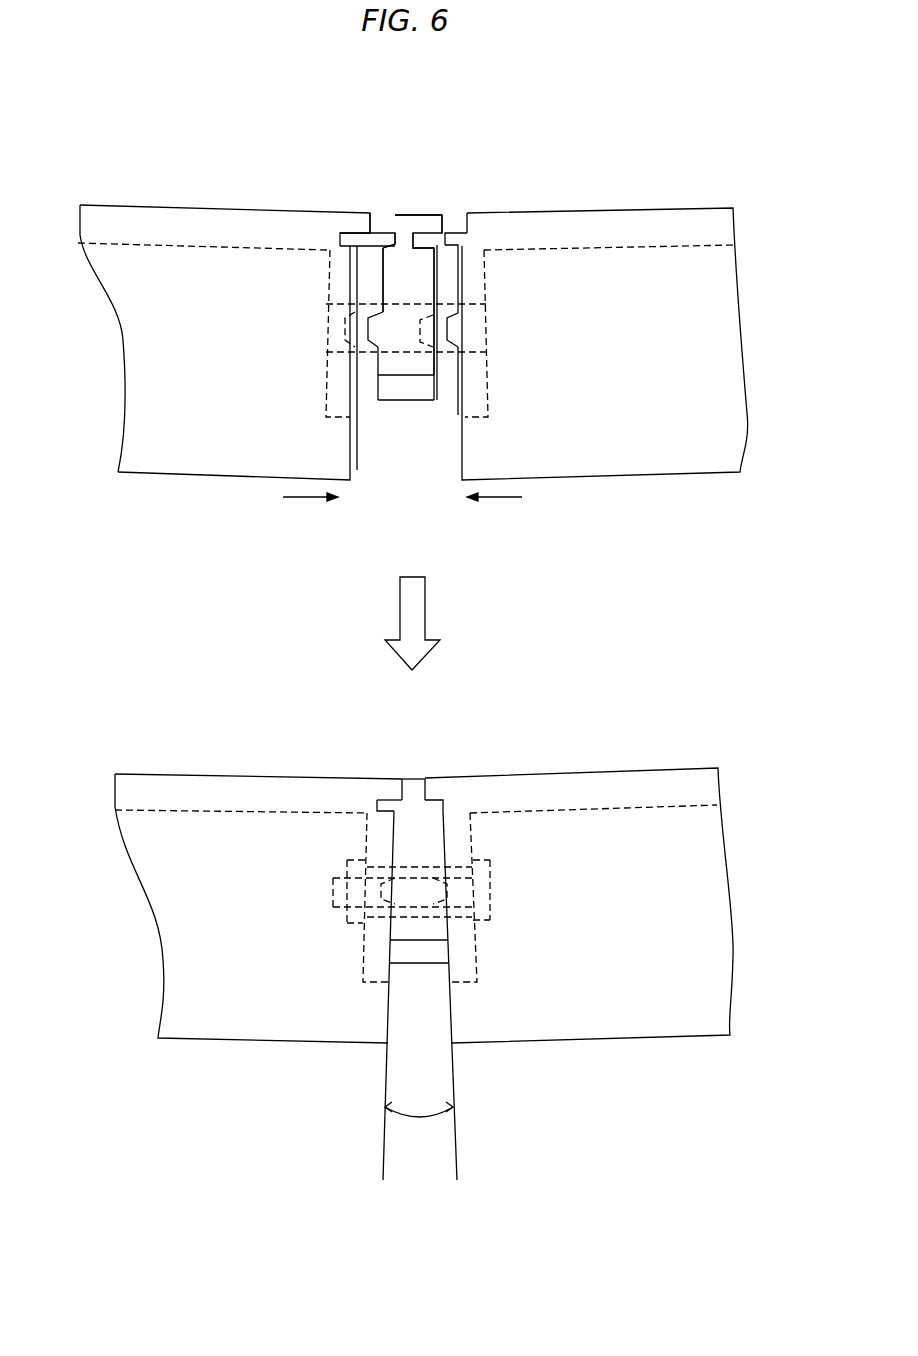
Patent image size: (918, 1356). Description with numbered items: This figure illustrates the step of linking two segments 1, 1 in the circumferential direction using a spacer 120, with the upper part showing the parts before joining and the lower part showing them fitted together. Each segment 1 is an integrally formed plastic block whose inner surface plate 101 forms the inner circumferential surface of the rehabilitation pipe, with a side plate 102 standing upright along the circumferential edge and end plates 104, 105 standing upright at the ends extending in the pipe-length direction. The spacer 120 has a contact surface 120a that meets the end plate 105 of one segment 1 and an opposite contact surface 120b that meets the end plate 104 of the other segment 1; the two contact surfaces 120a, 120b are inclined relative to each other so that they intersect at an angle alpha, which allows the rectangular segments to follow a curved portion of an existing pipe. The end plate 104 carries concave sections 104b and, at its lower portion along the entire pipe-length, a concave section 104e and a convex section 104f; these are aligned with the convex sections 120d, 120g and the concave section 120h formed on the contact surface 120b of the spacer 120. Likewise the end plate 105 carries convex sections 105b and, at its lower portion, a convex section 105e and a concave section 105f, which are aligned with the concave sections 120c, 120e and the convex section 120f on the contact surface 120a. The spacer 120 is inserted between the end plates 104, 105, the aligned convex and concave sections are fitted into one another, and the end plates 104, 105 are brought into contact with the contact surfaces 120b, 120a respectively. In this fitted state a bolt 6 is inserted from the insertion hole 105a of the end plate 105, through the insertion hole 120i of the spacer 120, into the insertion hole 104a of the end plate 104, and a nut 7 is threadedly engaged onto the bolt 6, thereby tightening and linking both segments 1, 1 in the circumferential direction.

The segment 1 is at (184, 183).
The inner surface plate 101 is at (265, 213).
The side plate 102 is at (196, 478).
The end plate 104 is at (340, 418).
The insertion hole 104a is at (330, 320).
The concave section 104b is at (346, 345).
The concave section 104e is at (343, 232).
The convex section 104f is at (370, 232).
The end plate 105 is at (475, 420).
The insertion hole 105a is at (487, 312).
The convex section 105b is at (450, 330).
The convex section 105e is at (465, 246).
The concave section 105f is at (466, 230).
The spacer 120 is at (401, 492).
The contact surface 120a is at (444, 395).
The contact surface 120b is at (368, 397).
The concave section 120c is at (445, 332).
The convex section 120d is at (377, 340).
The concave section 120e is at (428, 240).
The convex section 120f is at (453, 213).
The convex section 120g is at (360, 248).
The concave section 120h is at (397, 214).
The insertion hole 120i is at (410, 357).
The bolt 6 is at (488, 873).
The nut 7 is at (347, 868).